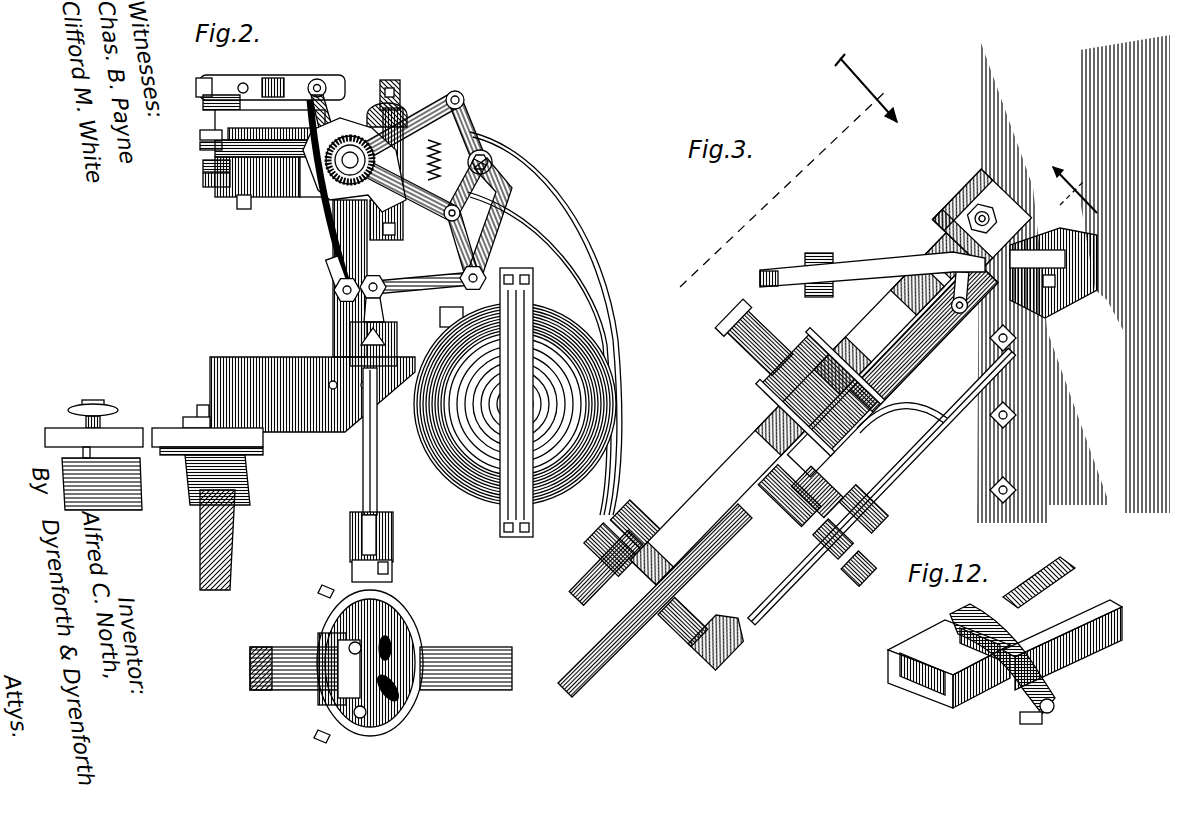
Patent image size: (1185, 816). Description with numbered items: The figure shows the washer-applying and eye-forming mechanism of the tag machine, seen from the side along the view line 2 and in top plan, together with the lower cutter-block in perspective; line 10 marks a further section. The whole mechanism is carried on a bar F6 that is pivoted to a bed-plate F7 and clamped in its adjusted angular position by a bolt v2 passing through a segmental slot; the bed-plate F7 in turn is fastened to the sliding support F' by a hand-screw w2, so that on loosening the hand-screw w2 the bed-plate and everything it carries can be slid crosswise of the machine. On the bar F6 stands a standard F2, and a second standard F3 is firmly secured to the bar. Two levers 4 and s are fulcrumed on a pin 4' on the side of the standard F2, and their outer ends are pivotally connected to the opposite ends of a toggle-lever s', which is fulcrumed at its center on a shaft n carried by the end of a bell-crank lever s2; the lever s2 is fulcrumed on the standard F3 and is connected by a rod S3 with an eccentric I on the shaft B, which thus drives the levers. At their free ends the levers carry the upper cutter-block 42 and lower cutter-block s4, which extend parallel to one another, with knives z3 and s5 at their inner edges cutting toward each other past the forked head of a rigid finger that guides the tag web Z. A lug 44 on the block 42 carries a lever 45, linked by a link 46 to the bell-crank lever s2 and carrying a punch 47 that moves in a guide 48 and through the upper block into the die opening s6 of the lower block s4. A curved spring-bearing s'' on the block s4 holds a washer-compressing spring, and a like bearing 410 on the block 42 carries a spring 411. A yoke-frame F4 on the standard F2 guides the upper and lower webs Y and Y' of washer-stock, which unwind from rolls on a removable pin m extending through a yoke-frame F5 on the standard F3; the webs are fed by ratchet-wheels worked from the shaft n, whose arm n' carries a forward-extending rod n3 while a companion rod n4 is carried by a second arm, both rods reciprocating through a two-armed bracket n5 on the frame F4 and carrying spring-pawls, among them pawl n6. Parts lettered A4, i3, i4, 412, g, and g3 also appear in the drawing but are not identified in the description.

In FIG. 2, the lever 4 is at (328, 153).
In FIG. 3, the lever 4 is at (824, 382).
In FIG. 2, the pin 4' is at (337, 116).
In FIG. 3, the pin 4' is at (755, 337).
In FIG. 2, the upper cutter-block 42 is at (215, 150).
In FIG. 3, the upper cutter-block 42 is at (1065, 300).
In FIG. 2, the lug 44 is at (205, 104).
In FIG. 2, the lever 45 is at (278, 76).
In FIG. 3, the lever 45 is at (882, 266).
In FIG. 2, the link 46 is at (318, 222).
In FIG. 2, the punch 47 is at (258, 76).
In FIG. 3, the punch 47 is at (977, 292).
In FIG. 2, the guide 48 is at (270, 118).
In FIG. 2, the spring-bearing 410 is at (205, 134).
In FIG. 2, the washer-compressing spring 411 is at (200, 146).
In FIG. 2, the plate 412 is at (203, 166).
In FIG. 2, the knife z3 is at (350, 108).
In FIG. 2, the sliding support F' is at (341, 289).
In FIG. 2, the standard F2 is at (333, 318).
In FIG. 2, the standard F3 is at (440, 315).
In FIG. 3, the yoke-frame F4 is at (776, 410).
In FIG. 2, the yoke-frame F5 is at (498, 512).
In FIG. 2, the bar F6 is at (312, 394).
In FIG. 2, the bed-plate F7 is at (264, 449).
In FIG. 2, the lever s is at (371, 226).
In FIG. 2, the toggle-lever s' is at (489, 194).
In FIG. 3, the toggle-lever s' is at (625, 537).
In FIG. 2, the bell-crank lever s2 is at (470, 256).
In FIG. 3, the bell-crank lever s2 is at (583, 583).
In FIG. 12, the bell-crank lever s2 is at (1039, 582).
In FIG. 2, the curved spring-bearing s'' is at (200, 185).
In FIG. 12, the curved spring-bearing s'' is at (1022, 713).
In FIG. 12, the lower cutter-block s4 is at (1015, 680).
In FIG. 2, the knife s5 is at (252, 205).
In FIG. 12, the knife s5 is at (950, 625).
In FIG. 12, the opening s6 is at (990, 608).
In FIG. 2, the upper web Y is at (546, 323).
In FIG. 2, the lower web Y' is at (539, 353).
In FIG. 2, the removable pin m is at (526, 399).
In FIG. 2, the bolt v2 is at (195, 405).
In FIG. 2, the hand-screw w2 is at (94, 444).
In FIG. 2, the post A4 is at (236, 550).
In FIG. 2, the rod S3 is at (363, 472).
In FIG. 2, the eccentric I is at (413, 640).
In FIG. 2, the shaft B is at (285, 645).
In FIG. 2, the collar i3 is at (326, 640).
In FIG. 2, the slot i4 is at (392, 627).
In FIG. 3, the web Z is at (1073, 279).
In FIG. 3, the view line 2 is at (795, 170).
In FIG. 3, the section line 10 is at (1080, 189).
In FIG. 3, the shaft n is at (655, 600).
In FIG. 3, the arm n' is at (705, 623).
In FIG. 3, the rod n3 is at (918, 455).
In FIG. 3, the rod n4 is at (892, 368).
In FIG. 3, the two-armed bracket n5 is at (928, 420).
In FIG. 3, the spring-pawl n6 is at (878, 513).
In FIG. 3, the collar g is at (835, 540).
In FIG. 3, the block g3 is at (858, 570).